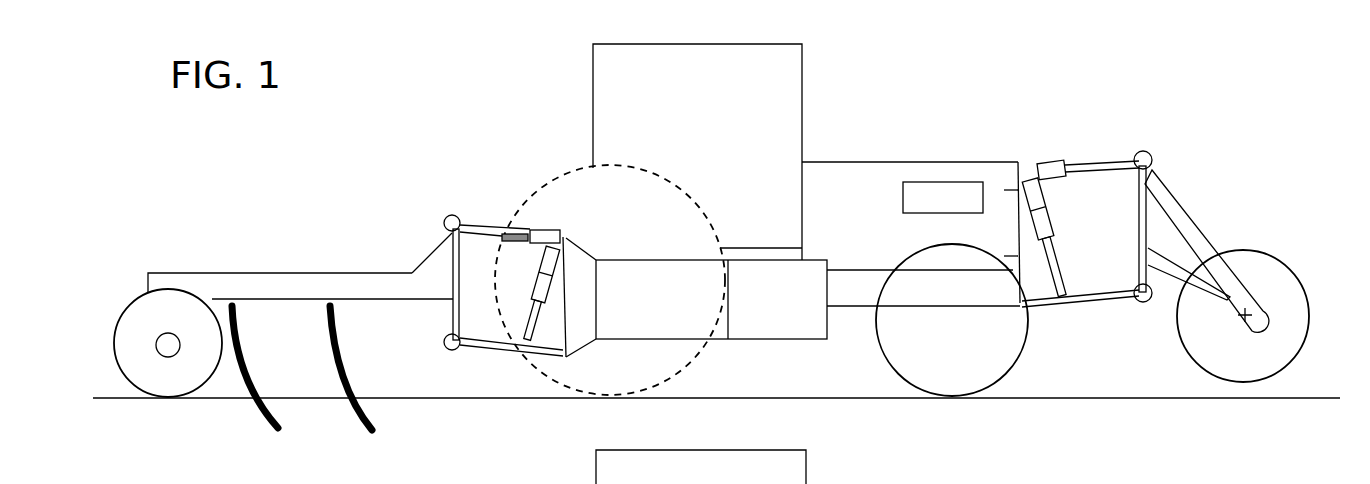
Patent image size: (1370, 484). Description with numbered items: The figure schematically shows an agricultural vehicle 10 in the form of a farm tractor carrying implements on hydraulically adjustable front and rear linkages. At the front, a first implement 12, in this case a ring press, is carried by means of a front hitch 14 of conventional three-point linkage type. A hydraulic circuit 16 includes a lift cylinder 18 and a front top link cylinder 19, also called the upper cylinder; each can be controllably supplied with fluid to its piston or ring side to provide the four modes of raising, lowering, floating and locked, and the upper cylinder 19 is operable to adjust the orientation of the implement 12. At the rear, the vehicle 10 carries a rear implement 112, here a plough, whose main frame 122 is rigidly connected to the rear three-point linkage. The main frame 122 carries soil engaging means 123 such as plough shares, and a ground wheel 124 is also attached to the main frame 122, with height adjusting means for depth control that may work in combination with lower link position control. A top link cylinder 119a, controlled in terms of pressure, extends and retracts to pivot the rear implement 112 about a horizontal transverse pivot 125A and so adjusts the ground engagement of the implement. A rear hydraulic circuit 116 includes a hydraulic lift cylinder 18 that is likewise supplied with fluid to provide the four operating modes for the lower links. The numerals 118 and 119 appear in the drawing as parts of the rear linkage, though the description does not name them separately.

The agricultural vehicle 10 is at (897, 123).
The first implement 12 is at (1238, 215).
The front hitch 14 is at (1105, 128).
The hydraulic circuit 16 is at (966, 188).
The lift cylinder 18 is at (1045, 205).
The front top link cylinder 19 is at (1092, 160).
The rear implement 112 is at (339, 266).
The hydraulic circuit 116 is at (696, 297).
The implement hitch cylinder 118 is at (536, 305).
The hitch upper link 119 is at (480, 224).
The top link cylinder 119a is at (530, 227).
The main frame 122 is at (283, 295).
The soil engaging means 123 is at (352, 408).
The ground wheel 124 is at (180, 326).
The horizontal transverse pivot 125A is at (445, 348).